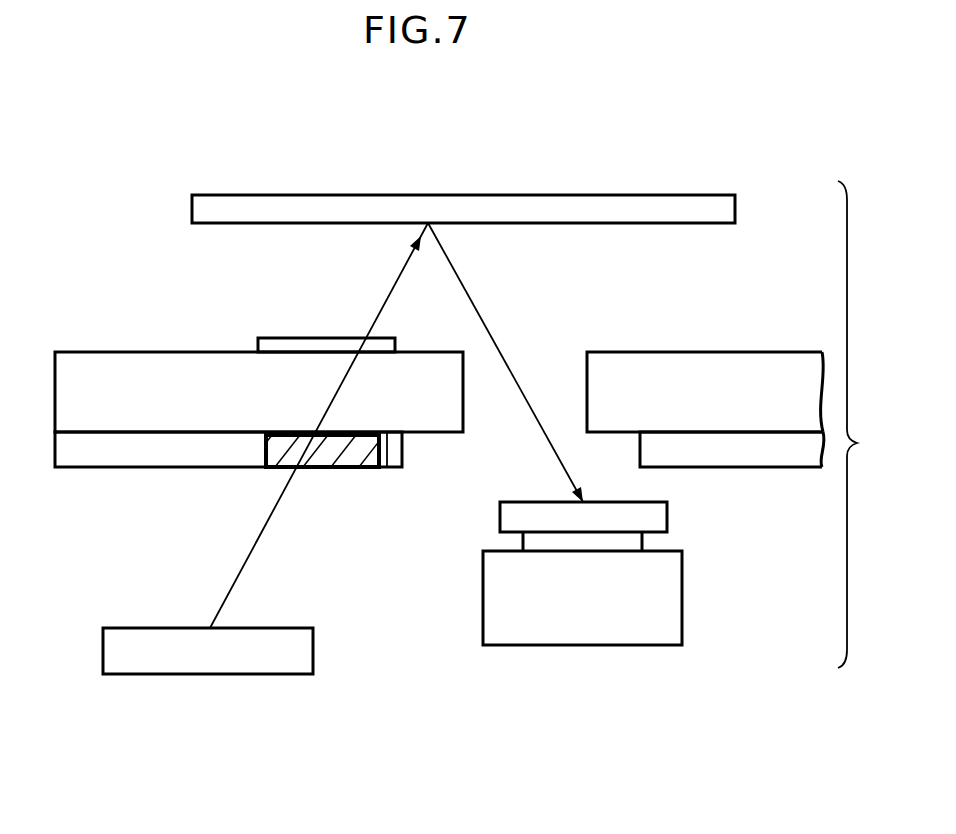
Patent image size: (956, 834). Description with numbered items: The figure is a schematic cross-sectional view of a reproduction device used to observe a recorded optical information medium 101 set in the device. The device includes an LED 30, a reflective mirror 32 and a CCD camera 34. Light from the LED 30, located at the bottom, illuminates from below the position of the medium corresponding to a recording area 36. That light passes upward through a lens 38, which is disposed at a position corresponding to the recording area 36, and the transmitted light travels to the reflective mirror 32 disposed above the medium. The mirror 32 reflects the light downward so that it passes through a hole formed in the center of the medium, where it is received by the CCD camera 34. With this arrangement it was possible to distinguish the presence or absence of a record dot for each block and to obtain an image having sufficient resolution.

The recorded optical information medium 101 is at (64, 333).
The LED 30 is at (150, 662).
The reflective mirror 32 is at (569, 195).
The CCD camera 34 is at (630, 625).
The recording area 36 is at (358, 457).
The lens 38 is at (320, 342).